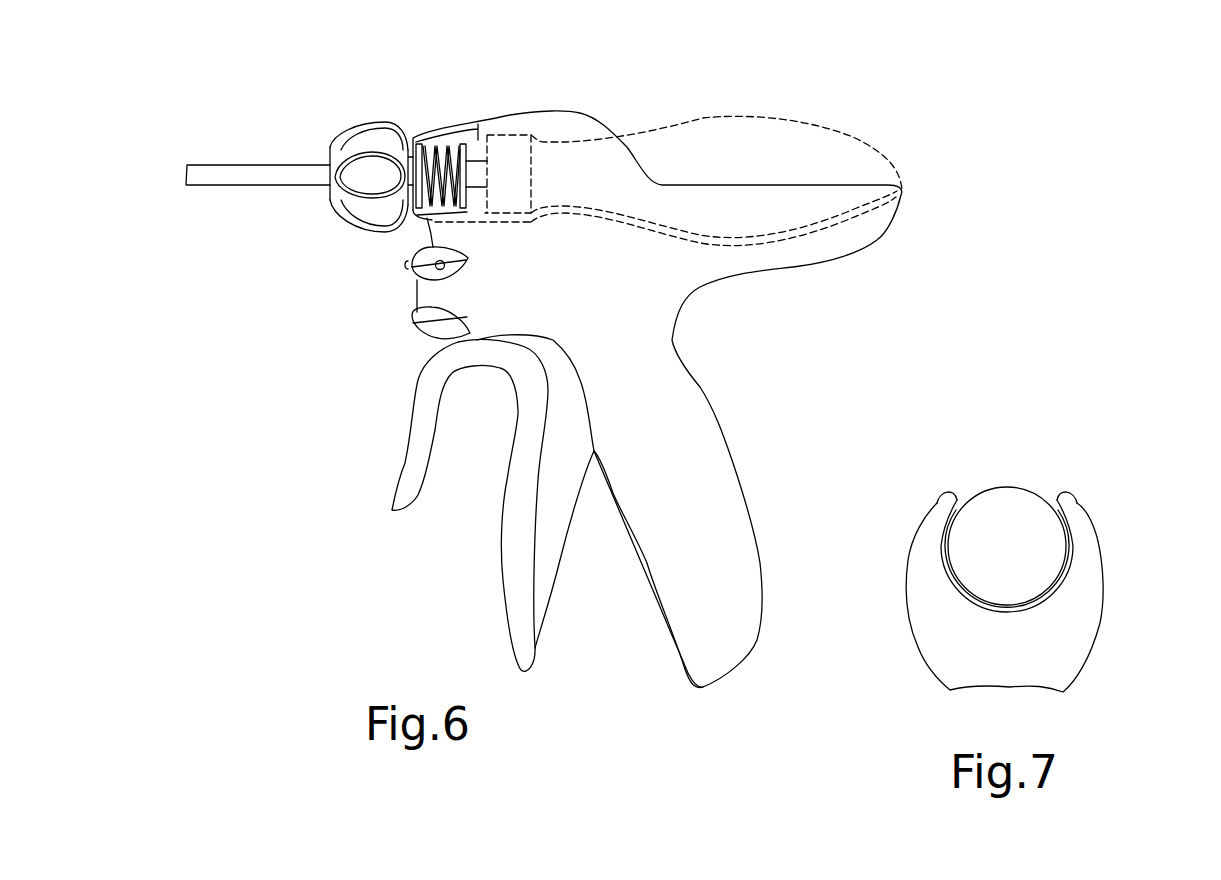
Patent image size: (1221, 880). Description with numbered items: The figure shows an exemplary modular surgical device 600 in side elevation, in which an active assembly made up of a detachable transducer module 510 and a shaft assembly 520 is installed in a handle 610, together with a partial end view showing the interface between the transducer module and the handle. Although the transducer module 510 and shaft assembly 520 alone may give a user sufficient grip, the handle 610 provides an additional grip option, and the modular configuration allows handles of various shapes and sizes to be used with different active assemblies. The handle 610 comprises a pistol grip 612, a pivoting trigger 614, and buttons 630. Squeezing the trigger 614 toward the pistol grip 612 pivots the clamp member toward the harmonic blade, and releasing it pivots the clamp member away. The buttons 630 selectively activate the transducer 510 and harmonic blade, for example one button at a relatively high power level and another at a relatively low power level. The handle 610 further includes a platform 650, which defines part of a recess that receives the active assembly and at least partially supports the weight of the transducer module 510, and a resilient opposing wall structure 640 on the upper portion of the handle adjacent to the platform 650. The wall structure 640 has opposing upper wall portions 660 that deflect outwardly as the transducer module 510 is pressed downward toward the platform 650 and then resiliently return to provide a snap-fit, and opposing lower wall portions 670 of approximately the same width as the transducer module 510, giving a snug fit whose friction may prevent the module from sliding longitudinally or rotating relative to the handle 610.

In FIG. 6, the detachable transducer module 510 is at (826, 122).
In FIG. 7, the detachable transducer module 510 is at (988, 486).
In FIG. 6, the shaft assembly 520 is at (268, 165).
In FIG. 6, the surgical device 600 is at (312, 583).
In FIG. 6, the handle 610 is at (739, 412).
In FIG. 6, the pistol grip 612 is at (668, 575).
In FIG. 6, the pivoting trigger 614 is at (505, 592).
In FIG. 6, the buttons 630 is at (412, 282).
In FIG. 6, the resilient opposing wall structure 640 is at (536, 112).
In FIG. 7, the resilient opposing wall structure 640 is at (950, 486).
In FIG. 6, the platform 650 is at (824, 233).
In FIG. 7, the platform 650 is at (1007, 612).
In FIG. 7, the upper wall portions 660 is at (924, 519).
In FIG. 7, the lower wall portions 670 is at (943, 567).